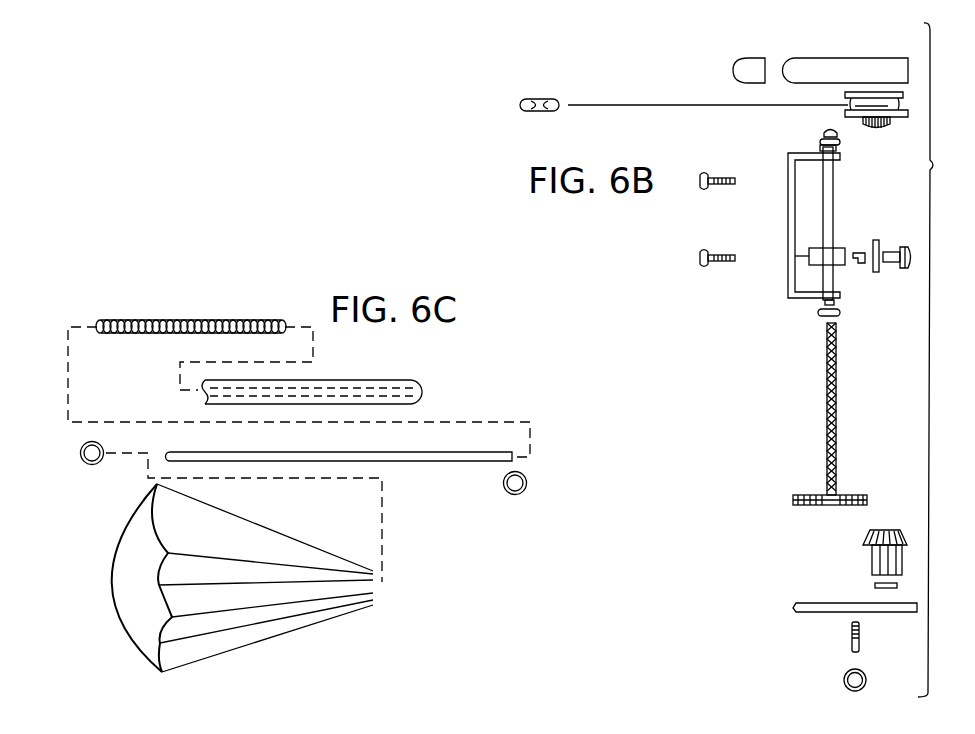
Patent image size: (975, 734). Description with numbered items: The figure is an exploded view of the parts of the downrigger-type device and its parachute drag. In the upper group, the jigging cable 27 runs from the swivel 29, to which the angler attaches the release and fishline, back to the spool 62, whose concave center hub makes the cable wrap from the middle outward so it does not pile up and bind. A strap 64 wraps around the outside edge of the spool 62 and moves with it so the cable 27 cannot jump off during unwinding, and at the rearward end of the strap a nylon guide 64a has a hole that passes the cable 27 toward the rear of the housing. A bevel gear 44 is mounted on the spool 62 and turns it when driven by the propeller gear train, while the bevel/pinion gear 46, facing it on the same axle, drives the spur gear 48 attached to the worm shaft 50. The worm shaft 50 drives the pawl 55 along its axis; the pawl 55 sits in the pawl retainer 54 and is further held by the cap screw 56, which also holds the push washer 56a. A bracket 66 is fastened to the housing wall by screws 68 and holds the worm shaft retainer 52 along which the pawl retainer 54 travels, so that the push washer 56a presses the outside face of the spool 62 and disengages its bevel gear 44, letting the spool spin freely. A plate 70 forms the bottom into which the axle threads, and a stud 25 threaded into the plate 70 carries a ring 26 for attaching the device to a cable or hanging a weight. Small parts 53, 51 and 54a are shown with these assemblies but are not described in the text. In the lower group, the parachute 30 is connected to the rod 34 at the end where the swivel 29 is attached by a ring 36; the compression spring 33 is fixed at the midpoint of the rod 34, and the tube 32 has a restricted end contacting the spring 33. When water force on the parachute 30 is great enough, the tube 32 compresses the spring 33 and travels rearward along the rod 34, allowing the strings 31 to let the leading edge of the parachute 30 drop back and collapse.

In FIG. 6B, the jigging cable 27 is at (687, 86).
In FIG. 6B, the swivel 29 is at (537, 111).
In FIG. 6B, the nylon guide 64a is at (738, 65).
In FIG. 6B, the strap 64 is at (877, 59).
In FIG. 6B, the spool 62 is at (903, 112).
In FIG. 6B, the bevel gear 44 is at (885, 128).
In FIG. 6B, the cap 53 is at (823, 133).
In FIG. 6B, the washer 51 is at (820, 142).
In FIG. 6B, the bracket 66 is at (788, 198).
In FIG. 6B, the screws 68 is at (718, 188).
In FIG. 6B, the worm shaft retainer 52 is at (832, 212).
In FIG. 6B, the pawl retainer 54 is at (839, 248).
In FIG. 6B, the slider pin 54a is at (797, 257).
In FIG. 6B, the pawl 55 is at (859, 265).
In FIG. 6B, the push washer 56a is at (878, 244).
In FIG. 6B, the cap screw 56 is at (907, 246).
In FIG. 6B, the worm shaft 50 is at (836, 412).
In FIG. 6B, the spur gear 48 is at (793, 498).
In FIG. 6B, the bevel/pinion gear 46 is at (872, 560).
In FIG. 6B, the plate 70 is at (792, 603).
In FIG. 6B, the stud 25 is at (852, 636).
In FIG. 6B, the ring 26 is at (842, 680).
In FIG. 6C, the compression spring 33 is at (222, 321).
In FIG. 6C, the tube 32 is at (356, 381).
In FIG. 6C, the rod 34 is at (415, 454).
In FIG. 6C, the ring 36 is at (97, 464).
In FIG. 6C, the parachute 30 is at (110, 574).
In FIG. 6C, the strings 31 is at (270, 561).